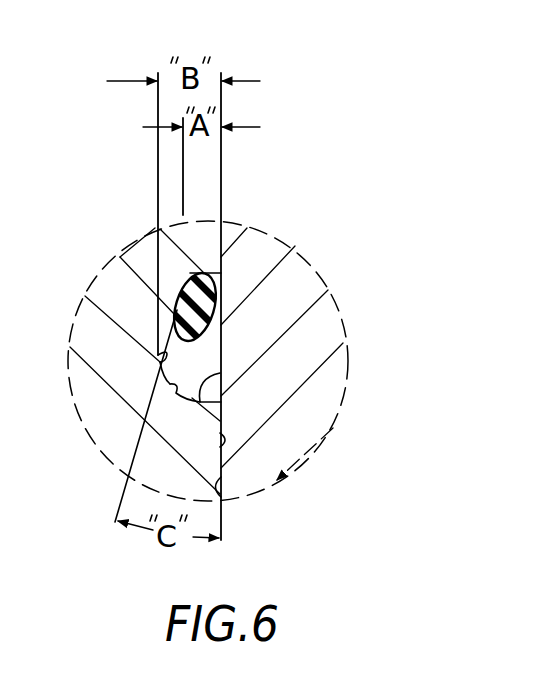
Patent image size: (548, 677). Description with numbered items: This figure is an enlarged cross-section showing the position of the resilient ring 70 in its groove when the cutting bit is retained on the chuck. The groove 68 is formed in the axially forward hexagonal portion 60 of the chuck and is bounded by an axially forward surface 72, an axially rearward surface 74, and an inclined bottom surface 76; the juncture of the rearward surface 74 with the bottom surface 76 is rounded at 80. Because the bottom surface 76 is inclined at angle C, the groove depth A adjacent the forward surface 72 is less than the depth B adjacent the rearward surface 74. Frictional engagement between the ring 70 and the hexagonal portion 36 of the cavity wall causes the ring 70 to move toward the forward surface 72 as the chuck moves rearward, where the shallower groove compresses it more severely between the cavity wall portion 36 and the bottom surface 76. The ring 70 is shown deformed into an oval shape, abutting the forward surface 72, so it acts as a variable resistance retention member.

The axially forward surface 72 is at (208, 300).
The resilient ring 70 is at (221, 297).
The groove 68 is at (197, 363).
The axially rearward surface 74 is at (203, 383).
The inclined bottom surface 76 is at (160, 362).
The rounded juncture 80 is at (170, 386).
The axially forward hexagonal portion 60 is at (220, 440).
The hexagonal portion of the cavity wall 36 is at (222, 494).